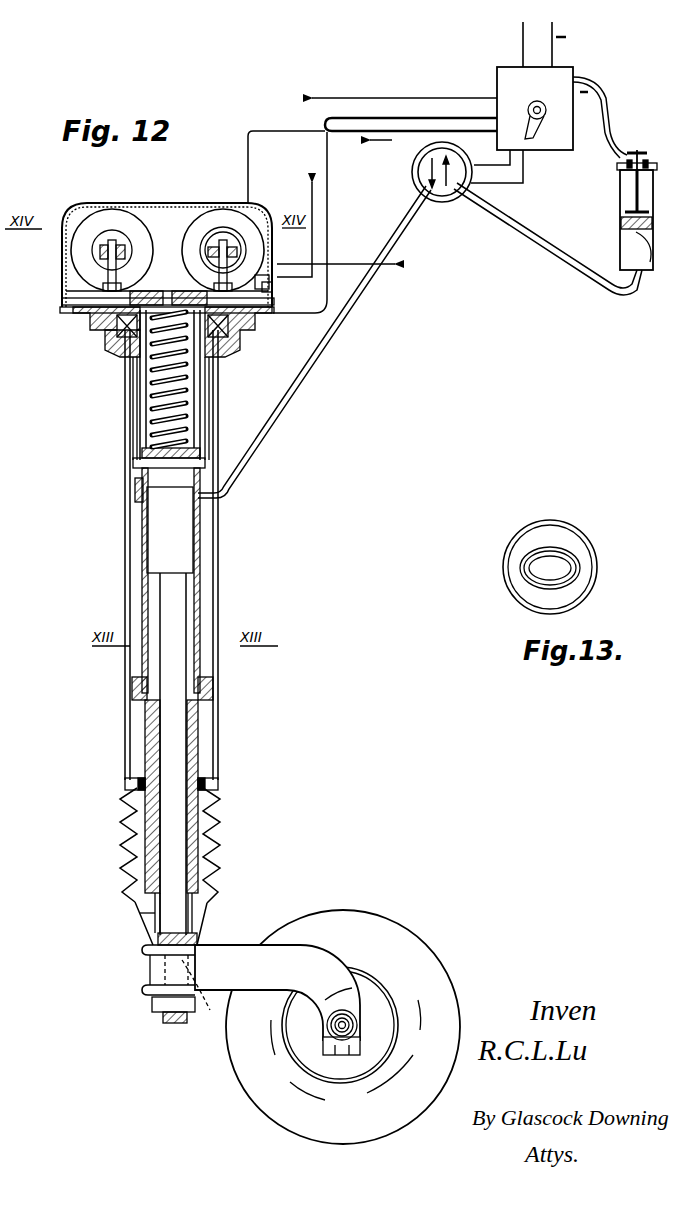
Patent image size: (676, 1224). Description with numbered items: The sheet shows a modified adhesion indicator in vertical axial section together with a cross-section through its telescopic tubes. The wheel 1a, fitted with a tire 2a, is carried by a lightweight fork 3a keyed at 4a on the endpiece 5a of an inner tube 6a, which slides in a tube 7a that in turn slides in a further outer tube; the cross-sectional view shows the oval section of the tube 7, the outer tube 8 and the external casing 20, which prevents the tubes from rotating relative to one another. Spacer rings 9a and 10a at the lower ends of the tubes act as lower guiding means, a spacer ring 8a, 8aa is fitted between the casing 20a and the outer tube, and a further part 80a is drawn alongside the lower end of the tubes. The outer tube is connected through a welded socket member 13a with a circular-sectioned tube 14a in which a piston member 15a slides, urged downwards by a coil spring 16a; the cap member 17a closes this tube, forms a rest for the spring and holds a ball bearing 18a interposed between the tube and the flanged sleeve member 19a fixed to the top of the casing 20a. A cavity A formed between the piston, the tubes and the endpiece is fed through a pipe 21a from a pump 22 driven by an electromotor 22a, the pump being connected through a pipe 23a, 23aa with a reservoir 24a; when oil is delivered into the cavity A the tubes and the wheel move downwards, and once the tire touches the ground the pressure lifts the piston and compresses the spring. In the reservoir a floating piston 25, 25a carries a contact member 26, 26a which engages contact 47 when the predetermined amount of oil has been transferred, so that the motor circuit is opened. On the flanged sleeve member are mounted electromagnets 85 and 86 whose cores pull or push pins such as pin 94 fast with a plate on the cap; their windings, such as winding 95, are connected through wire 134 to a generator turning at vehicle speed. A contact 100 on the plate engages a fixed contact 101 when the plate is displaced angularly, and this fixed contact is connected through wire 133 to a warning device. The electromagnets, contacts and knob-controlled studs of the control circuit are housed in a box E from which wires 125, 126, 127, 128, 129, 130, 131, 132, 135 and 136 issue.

In FIG. 12, the electromagnet 85 is at (128, 226).
In FIG. 12, the electromagnet 86 is at (197, 226).
In FIG. 12, the pin 94 is at (205, 254).
In FIG. 12, the winding 95 is at (104, 280).
In FIG. 12, the fixed contact 101 is at (272, 289).
In FIG. 12, the contact 100 is at (228, 303).
In FIG. 12, the cap member 17a is at (108, 323).
In FIG. 12, the ball bearing 18a is at (120, 330).
In FIG. 12, the flanged sleeve member 19a is at (118, 346).
In FIG. 12, the coil spring 16a is at (168, 377).
In FIG. 12, the circular-sectioned tube 14a is at (141, 400).
In FIG. 12, the piston member 15a is at (142, 470).
In FIG. 12, the welded socket member 13a is at (137, 491).
In FIG. 12, the spacer ring 8a is at (143, 530).
In FIG. 12, the external casing 20a is at (219, 387).
In FIG. 12, the cavity A is at (186, 538).
In FIG. 12, the pipe 21a is at (255, 445).
In FIG. 12, the spacer ring 8aa is at (133, 693).
In FIG. 12, the spacer ring 10a is at (145, 798).
In FIG. 12, the tube 7a is at (147, 832).
In FIG. 12, the right bellows 80a is at (216, 812).
In FIG. 12, the spacer ring 9a is at (147, 893).
In FIG. 12, the inner tube 6a is at (140, 913).
In FIG. 12, the endpiece 5a is at (193, 948).
In FIG. 12, the fork 3a is at (240, 962).
In FIG. 12, the key 4a is at (188, 990).
In FIG. 12, the wheel 1a is at (378, 1002).
In FIG. 12, the tire 2a is at (440, 995).
In FIG. 12, the wire 125 is at (522, 50).
In FIG. 12, the wire 130 is at (554, 45).
In FIG. 12, the box E is at (567, 82).
In FIG. 12, the pipe 23a is at (542, 101).
In FIG. 12, the wire 132 is at (605, 100).
In FIG. 12, the wire 131 is at (609, 118).
In FIG. 12, the contact 47 is at (644, 150).
In FIG. 12, the contact member 26 is at (637, 148).
In FIG. 12, the floating piston 25 is at (630, 248).
In FIG. 12, the floating piston 25a is at (635, 188).
In FIG. 12, the contact member 26a is at (630, 212).
In FIG. 12, the reservoir 24a is at (626, 246).
In FIG. 12, the wire 136 is at (524, 170).
In FIG. 12, the wire 135 is at (492, 174).
In FIG. 12, the pipe 23aa is at (510, 220).
In FIG. 12, the electromotor 22a is at (439, 200).
In FIG. 12, the pump 22 is at (455, 195).
In FIG. 12, the wire 129 is at (392, 141).
In FIG. 12, the wire 133 is at (314, 242).
In FIG. 12, the wire 134 is at (376, 267).
In FIG. 12, the wire 127 is at (372, 117).
In FIG. 12, the wire 126 is at (407, 118).
In FIG. 12, the wire 128 is at (248, 162).
In FIG. 13, the external casing 20 is at (530, 543).
In FIG. 13, the tube 7 is at (530, 576).
In FIG. 13, the outer tube 8 is at (573, 579).